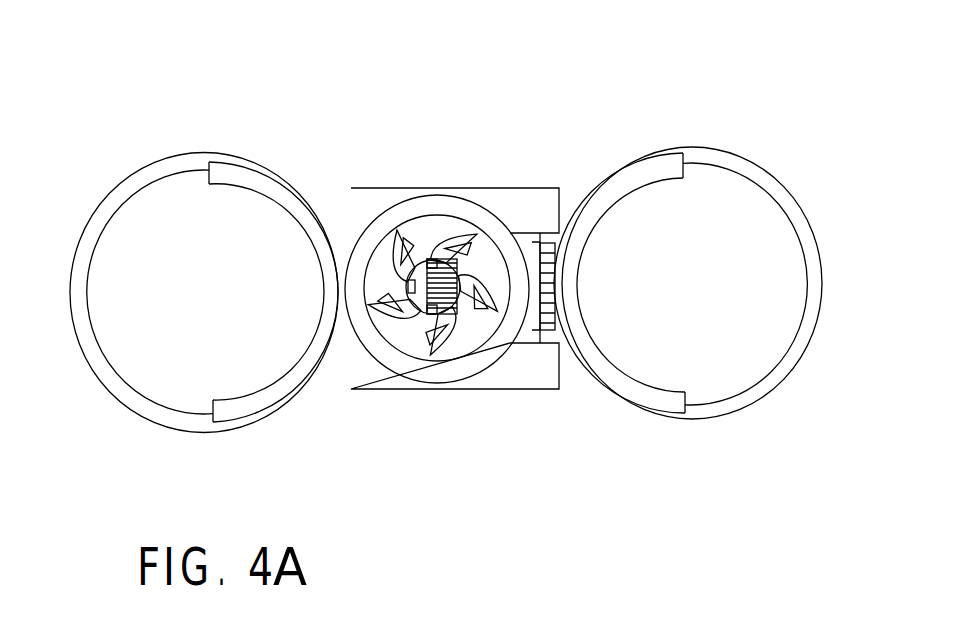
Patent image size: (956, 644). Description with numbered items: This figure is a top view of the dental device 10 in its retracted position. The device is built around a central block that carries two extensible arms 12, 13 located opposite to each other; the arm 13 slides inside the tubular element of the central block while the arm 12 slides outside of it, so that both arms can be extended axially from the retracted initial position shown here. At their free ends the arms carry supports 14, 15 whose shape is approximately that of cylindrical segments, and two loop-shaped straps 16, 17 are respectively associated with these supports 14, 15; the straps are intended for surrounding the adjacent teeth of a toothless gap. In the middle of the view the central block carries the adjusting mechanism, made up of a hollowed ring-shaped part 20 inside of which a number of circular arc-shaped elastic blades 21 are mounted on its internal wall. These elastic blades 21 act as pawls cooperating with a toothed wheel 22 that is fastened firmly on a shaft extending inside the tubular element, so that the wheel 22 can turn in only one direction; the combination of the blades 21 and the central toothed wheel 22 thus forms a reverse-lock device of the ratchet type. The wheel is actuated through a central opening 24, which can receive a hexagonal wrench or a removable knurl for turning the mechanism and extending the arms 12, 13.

The dental device 10 is at (369, 62).
The extensible arm 12 is at (533, 207).
The extensible arm 13 is at (340, 337).
The support 14 is at (247, 173).
The support 15 is at (643, 173).
The loop-shaped strap 16 is at (135, 183).
The loop-shaped strap 17 is at (767, 185).
The ring-shaped part 20 is at (440, 197).
The elastic blades 21 is at (457, 335).
The toothed wheel 22 is at (418, 325).
The central opening 24 is at (427, 273).